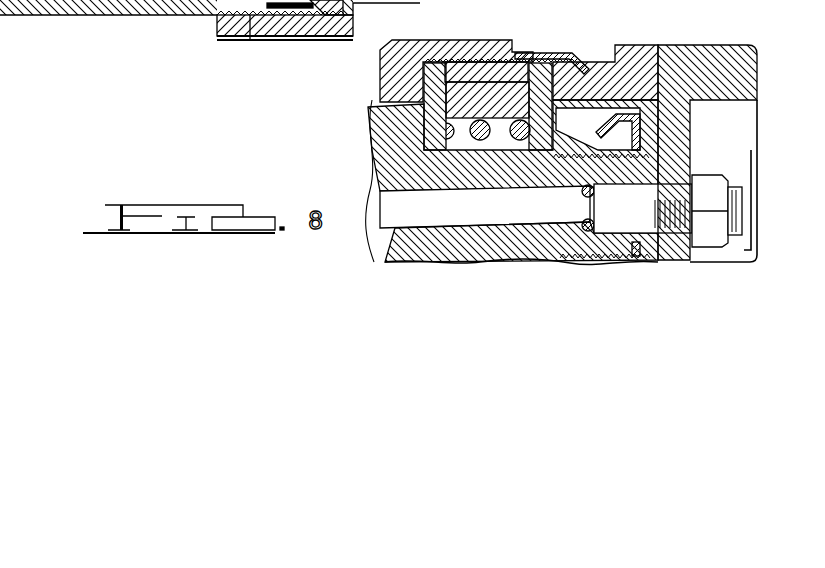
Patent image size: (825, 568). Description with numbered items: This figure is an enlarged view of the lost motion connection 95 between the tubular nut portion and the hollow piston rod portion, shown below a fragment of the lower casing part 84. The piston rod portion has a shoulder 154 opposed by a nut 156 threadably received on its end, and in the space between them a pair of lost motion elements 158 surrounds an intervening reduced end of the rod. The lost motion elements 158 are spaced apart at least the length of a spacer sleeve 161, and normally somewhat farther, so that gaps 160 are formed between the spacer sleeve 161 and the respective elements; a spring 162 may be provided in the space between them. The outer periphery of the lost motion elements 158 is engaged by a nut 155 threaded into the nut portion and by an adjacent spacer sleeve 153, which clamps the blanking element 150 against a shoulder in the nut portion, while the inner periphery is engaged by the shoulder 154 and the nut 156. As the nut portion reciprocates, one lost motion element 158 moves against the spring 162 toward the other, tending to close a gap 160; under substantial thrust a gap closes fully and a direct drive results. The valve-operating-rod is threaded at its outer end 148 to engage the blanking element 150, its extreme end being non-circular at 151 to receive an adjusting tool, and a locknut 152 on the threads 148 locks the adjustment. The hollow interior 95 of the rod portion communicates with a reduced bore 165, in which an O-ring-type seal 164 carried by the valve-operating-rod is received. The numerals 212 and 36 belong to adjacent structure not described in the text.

The centerline 212 is at (0, 32).
The lower casing part 84 is at (125, 15).
The housing body 36 is at (353, 13).
The nut 155 is at (380, 64).
The shoulder 154 is at (400, 103).
The gaps 160 is at (428, 98).
The spacer sleeve 161 is at (470, 90).
The lost motion connection 95 is at (520, 40).
The lost motion elements 158 is at (542, 92).
The spacer sleeve 153 is at (596, 82).
The blanking element 150 is at (667, 83).
The nut 156 is at (638, 138).
The locknut 152 is at (697, 180).
The non-circular end 151 is at (743, 200).
The spring 162 is at (483, 148).
The reduced bore 165 is at (530, 187).
The O-ring-type seal 164 is at (599, 191).
The threaded outer end 148 is at (757, 256).